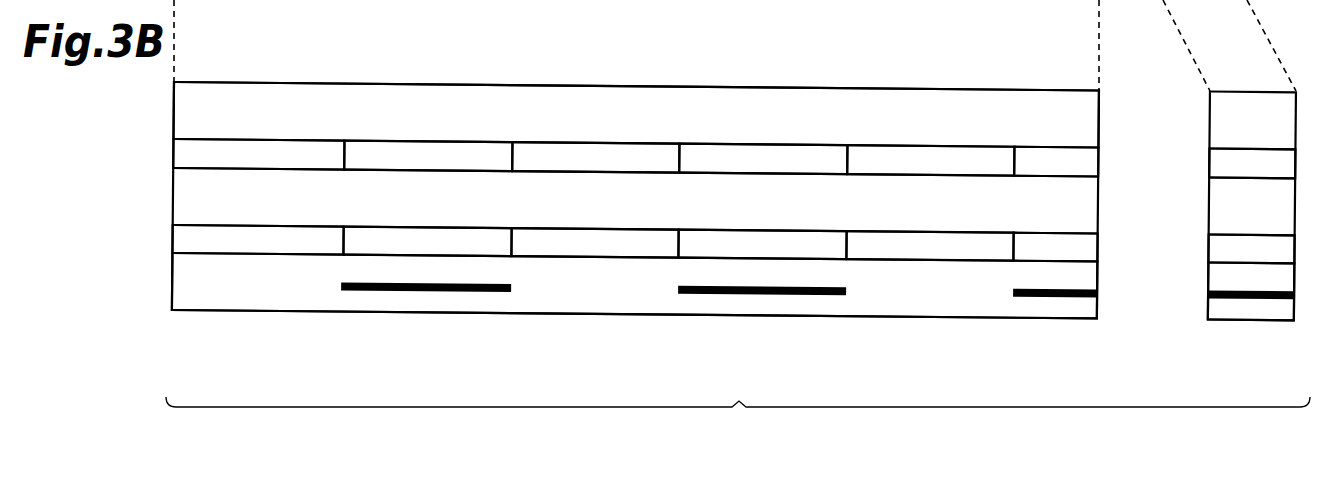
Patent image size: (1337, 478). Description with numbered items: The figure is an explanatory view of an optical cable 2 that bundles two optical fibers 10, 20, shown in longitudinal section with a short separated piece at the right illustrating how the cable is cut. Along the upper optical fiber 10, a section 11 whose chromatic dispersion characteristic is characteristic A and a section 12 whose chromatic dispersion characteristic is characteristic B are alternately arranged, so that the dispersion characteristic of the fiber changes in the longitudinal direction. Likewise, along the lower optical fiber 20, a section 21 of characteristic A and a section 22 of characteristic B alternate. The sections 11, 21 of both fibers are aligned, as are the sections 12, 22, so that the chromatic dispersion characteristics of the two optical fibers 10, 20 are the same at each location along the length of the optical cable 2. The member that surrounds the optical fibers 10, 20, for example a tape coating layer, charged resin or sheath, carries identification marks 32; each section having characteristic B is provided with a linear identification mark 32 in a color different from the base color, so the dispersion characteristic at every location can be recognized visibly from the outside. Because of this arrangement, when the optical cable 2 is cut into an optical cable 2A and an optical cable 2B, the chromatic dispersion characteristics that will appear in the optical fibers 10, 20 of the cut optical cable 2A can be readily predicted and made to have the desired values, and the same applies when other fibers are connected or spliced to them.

The optical cable 2 is at (738, 420).
The optical cable 2A is at (853, 319).
The optical cable 2B is at (1258, 322).
The optical fiber 10 is at (669, 145).
The section 11 is at (243, 146).
The section 12 is at (411, 150).
The optical fiber 20 is at (651, 260).
The section 21 is at (243, 247).
The section 22 is at (403, 235).
The identification mark 32 is at (400, 293).